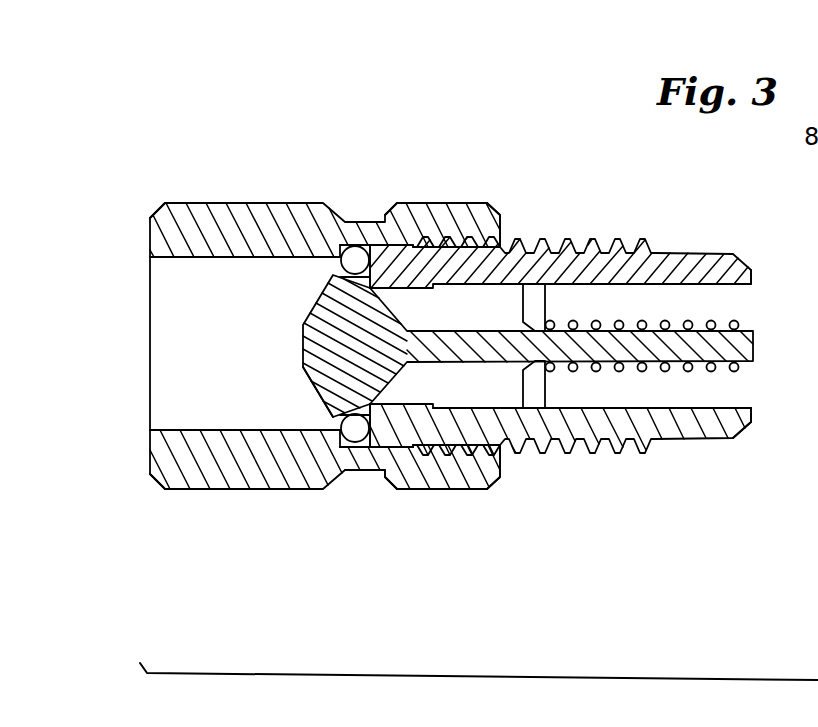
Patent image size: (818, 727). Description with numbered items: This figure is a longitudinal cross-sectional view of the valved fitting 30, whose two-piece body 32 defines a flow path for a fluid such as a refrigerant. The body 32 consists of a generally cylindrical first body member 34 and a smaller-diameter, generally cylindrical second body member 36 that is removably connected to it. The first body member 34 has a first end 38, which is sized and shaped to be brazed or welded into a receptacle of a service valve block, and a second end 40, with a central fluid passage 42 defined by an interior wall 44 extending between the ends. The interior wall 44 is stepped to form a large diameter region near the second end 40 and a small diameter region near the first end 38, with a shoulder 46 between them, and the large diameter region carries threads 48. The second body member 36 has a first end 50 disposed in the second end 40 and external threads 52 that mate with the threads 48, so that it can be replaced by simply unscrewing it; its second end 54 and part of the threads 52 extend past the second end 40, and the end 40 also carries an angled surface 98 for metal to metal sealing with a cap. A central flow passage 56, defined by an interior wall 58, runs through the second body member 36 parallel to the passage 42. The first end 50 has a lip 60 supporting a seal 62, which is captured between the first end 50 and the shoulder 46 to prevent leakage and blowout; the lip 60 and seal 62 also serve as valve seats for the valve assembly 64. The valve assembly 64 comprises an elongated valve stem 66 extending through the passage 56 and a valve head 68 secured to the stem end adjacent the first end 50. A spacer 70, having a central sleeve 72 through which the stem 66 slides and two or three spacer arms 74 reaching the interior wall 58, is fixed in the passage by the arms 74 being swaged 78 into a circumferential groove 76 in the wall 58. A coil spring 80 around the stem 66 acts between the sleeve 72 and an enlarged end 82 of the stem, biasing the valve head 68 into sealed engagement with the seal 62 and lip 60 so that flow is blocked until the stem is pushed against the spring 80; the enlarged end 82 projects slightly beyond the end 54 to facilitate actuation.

The valved fitting 30 is at (520, 172).
The two-piece body 32 is at (424, 496).
The first body member 34 is at (299, 205).
The second body member 36 is at (660, 238).
The first end 38 is at (156, 210).
The second end 40 is at (466, 204).
The central fluid passage 42 is at (190, 407).
The interior wall 44 is at (170, 262).
The shoulder 46 is at (340, 262).
The threads 48 is at (429, 238).
The first end 50 is at (387, 470).
The threads 52 is at (618, 455).
The second end 54 is at (741, 428).
The central flow passage 56 is at (735, 296).
The interior wall 58 is at (741, 405).
The lip 60 is at (374, 244).
The seal 62 is at (356, 246).
The valve assembly 64 is at (300, 395).
The valve stem 66 is at (690, 370).
The valve head 68 is at (322, 420).
The spacer 70 is at (488, 396).
The central sleeve 72 is at (494, 372).
The spacer arms 74 is at (463, 400).
The circumferential groove 76 is at (536, 288).
The swaged portion 78 is at (548, 290).
The coil spring 80 is at (672, 322).
The enlarged end 82 is at (753, 348).
The angled surface 98 is at (503, 213).